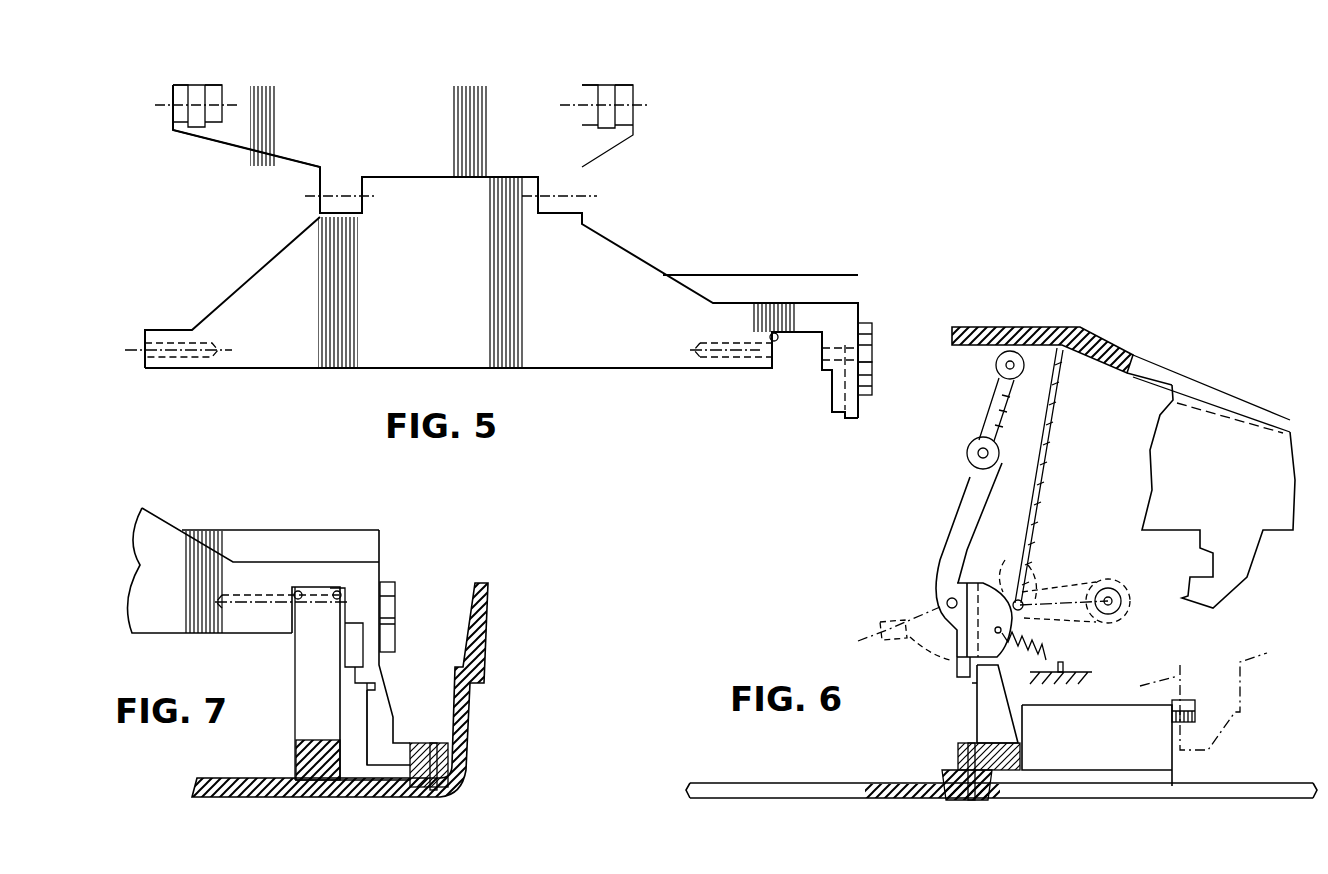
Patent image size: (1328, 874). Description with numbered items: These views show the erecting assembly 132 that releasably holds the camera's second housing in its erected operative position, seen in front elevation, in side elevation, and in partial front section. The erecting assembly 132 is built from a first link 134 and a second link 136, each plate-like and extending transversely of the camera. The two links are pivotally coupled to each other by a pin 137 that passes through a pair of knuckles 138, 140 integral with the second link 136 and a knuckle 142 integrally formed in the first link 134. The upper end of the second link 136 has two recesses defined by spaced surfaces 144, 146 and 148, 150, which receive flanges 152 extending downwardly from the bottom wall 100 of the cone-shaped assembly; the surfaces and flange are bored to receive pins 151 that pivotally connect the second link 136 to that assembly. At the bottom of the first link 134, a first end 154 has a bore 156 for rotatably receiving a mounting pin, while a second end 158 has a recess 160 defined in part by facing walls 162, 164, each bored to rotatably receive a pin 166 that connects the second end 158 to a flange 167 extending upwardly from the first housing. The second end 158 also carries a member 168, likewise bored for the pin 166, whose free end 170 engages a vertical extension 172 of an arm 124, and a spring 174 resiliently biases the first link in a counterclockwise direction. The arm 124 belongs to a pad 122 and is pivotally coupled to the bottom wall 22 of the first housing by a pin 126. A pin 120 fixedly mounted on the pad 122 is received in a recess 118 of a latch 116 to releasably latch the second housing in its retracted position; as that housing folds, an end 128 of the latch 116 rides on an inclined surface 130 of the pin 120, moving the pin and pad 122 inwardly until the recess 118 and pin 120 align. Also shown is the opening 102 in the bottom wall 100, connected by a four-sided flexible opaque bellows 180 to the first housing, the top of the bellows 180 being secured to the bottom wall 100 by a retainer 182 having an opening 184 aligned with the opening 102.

In FIG. 6, the bottom wall 22 is at (932, 800).
In FIG. 6, the bottom wall 100 is at (1022, 326).
In FIG. 6, the opening 102 is at (1137, 352).
In FIG. 6, the latch 116 is at (1250, 548).
In FIG. 6, the recess 118 is at (1142, 580).
In FIG. 6, the pin 120 is at (1170, 705).
In FIG. 6, the pad 122 is at (1137, 760).
In FIG. 7, the arm 124 is at (398, 745).
In FIG. 6, the arm 124 is at (955, 760).
In FIG. 7, the pin 126 is at (450, 752).
In FIG. 6, the pin 126 is at (958, 746).
In FIG. 6, the end 128 is at (1185, 600).
In FIG. 6, the inclined surface 130 is at (1178, 712).
In FIG. 6, the erecting assembly 132 is at (945, 512).
In FIG. 5, the first link 134 is at (580, 355).
In FIG. 7, the first link 134 is at (300, 528).
In FIG. 6, the first link 134 is at (945, 553).
In FIG. 5, the second link 136 is at (300, 158).
In FIG. 6, the second link 136 is at (992, 412).
In FIG. 6, the pin 137 is at (970, 455).
In FIG. 5, the knuckle 138 is at (318, 205).
In FIG. 5, the knuckle 140 is at (562, 208).
In FIG. 6, the knuckle 140 is at (1135, 556).
In FIG. 5, the knuckle 142 is at (415, 180).
In FIG. 5, the surface 144 is at (182, 87).
In FIG. 5, the surface 146 is at (200, 92).
In FIG. 5, the surface 148 is at (598, 88).
In FIG. 5, the surface 150 is at (618, 92).
In FIG. 6, the surface 150 is at (1000, 383).
In FIG. 6, the pin 151 is at (1003, 372).
In FIG. 6, the flange 152 is at (996, 362).
In FIG. 5, the first end 154 is at (145, 370).
In FIG. 5, the bore 156 is at (165, 340).
In FIG. 5, the second end 158 is at (742, 360).
In FIG. 7, the second end 158 is at (385, 575).
In FIG. 5, the recess 160 is at (800, 352).
In FIG. 5, the wall 162 is at (770, 335).
In FIG. 7, the wall 162 is at (296, 590).
In FIG. 5, the wall 164 is at (820, 345).
In FIG. 7, the wall 164 is at (345, 590).
In FIG. 7, the pin 166 is at (272, 605).
In FIG. 6, the pin 166 is at (944, 604).
In FIG. 7, the flange 167 is at (296, 668).
In FIG. 5, the member 168 is at (866, 320).
In FIG. 7, the member 168 is at (396, 603).
In FIG. 6, the member 168 is at (1012, 617).
In FIG. 5, the free end 170 is at (840, 420).
In FIG. 7, the free end 170 is at (378, 672).
In FIG. 6, the free end 170 is at (870, 634).
In FIG. 7, the vertical extension 172 is at (380, 697).
In FIG. 6, the vertical extension 172 is at (975, 690).
In FIG. 6, the spring 174 is at (1050, 662).
In FIG. 6, the bellows 180 is at (1052, 438).
In FIG. 6, the retainer 182 is at (1097, 376).
In FIG. 6, the opening 184 is at (1132, 372).